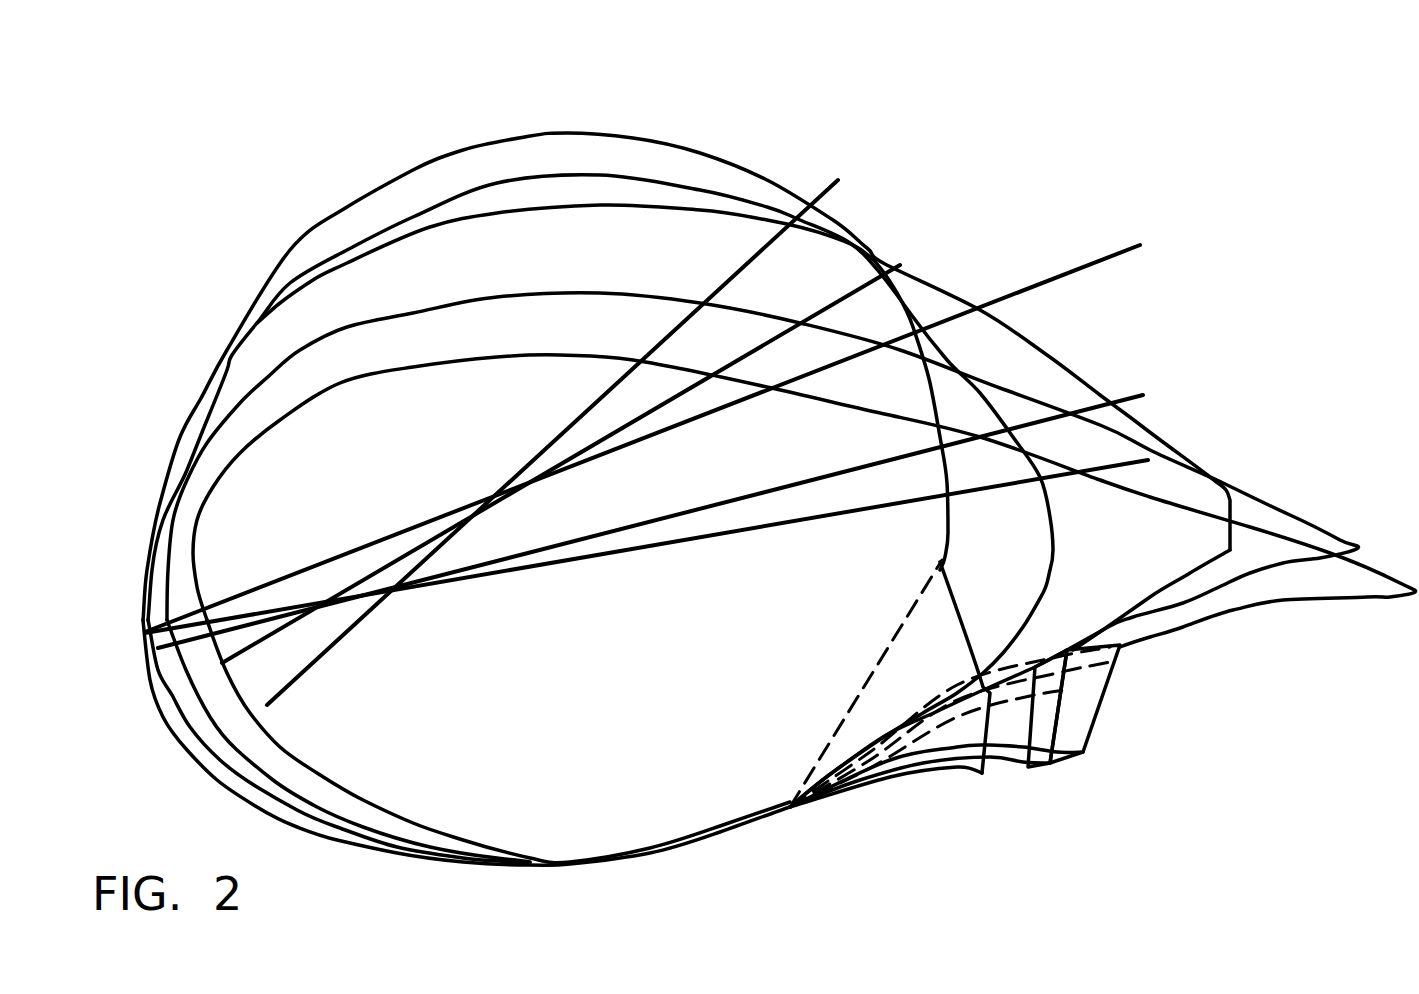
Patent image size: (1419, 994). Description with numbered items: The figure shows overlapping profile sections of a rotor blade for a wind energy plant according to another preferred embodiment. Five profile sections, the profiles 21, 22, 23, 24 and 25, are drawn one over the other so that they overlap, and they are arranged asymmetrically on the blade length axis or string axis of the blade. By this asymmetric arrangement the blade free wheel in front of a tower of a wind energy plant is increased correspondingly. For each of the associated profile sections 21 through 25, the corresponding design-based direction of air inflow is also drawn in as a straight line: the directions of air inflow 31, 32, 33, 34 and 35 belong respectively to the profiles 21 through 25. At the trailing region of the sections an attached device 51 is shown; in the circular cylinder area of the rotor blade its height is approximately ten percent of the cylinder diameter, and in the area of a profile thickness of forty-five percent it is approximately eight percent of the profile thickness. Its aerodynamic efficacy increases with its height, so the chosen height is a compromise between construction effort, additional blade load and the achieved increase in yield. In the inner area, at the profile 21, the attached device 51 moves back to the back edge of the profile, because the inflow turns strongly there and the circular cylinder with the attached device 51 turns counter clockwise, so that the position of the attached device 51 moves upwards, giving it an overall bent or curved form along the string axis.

The profile 21 is at (690, 148).
The profile 22 is at (727, 193).
The profile 23 is at (575, 203).
The profile 24 is at (477, 297).
The profile 25 is at (382, 372).
The direction of air inflow 31 is at (740, 259).
The direction of air inflow 32 is at (888, 280).
The direction of air inflow 33 is at (1070, 272).
The direction of air inflow 34 is at (1100, 406).
The direction of air inflow 35 is at (1130, 463).
The attached device 51 is at (943, 650).